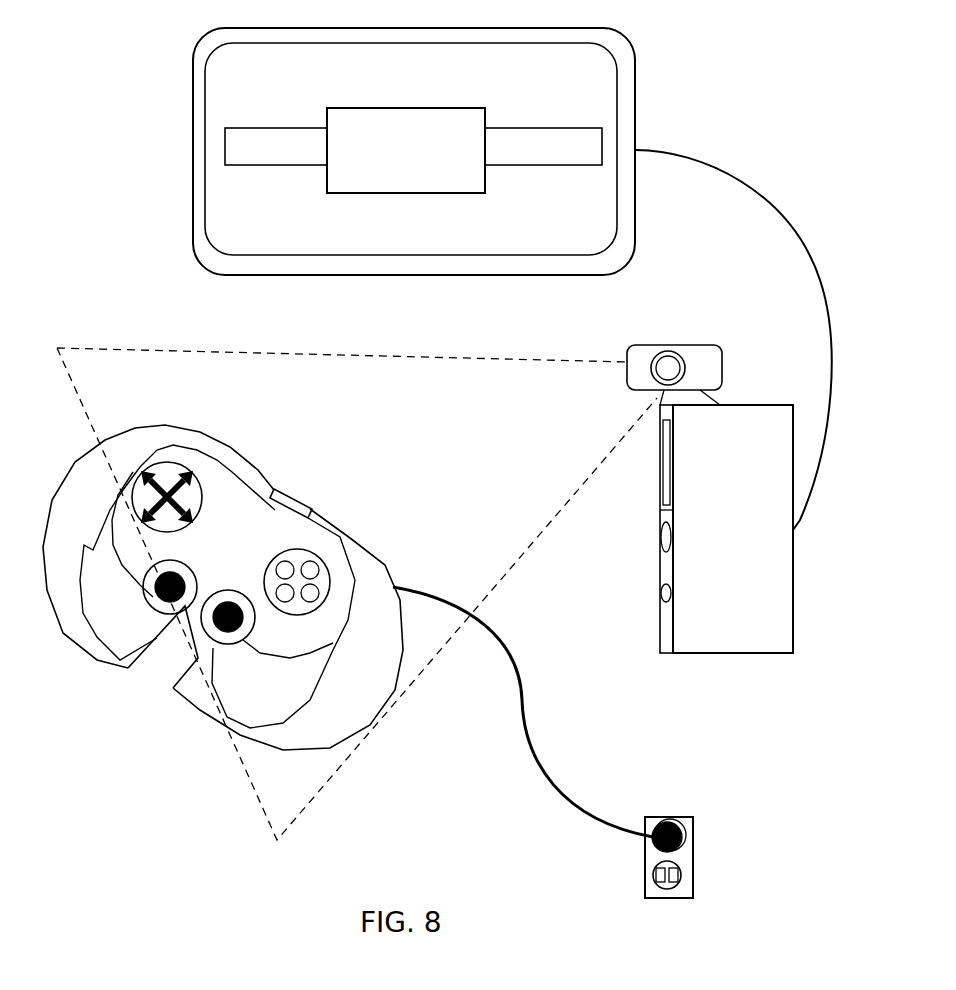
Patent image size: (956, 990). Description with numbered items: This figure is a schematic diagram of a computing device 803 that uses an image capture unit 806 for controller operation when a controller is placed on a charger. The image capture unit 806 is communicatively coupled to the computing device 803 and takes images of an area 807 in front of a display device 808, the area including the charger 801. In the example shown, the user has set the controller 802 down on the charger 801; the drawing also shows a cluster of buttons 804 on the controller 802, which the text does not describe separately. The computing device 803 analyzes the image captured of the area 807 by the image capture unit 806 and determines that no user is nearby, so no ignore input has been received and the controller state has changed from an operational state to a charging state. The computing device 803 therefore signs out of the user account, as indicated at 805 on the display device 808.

The charger 801 is at (223, 579).
The controller 802 is at (272, 496).
The computing device 803 is at (748, 459).
The controller button cluster 804 is at (315, 569).
The sign out indication 805 is at (486, 115).
The image capture unit 806 is at (693, 347).
The area 807 is at (160, 348).
The display device 808 is at (636, 57).